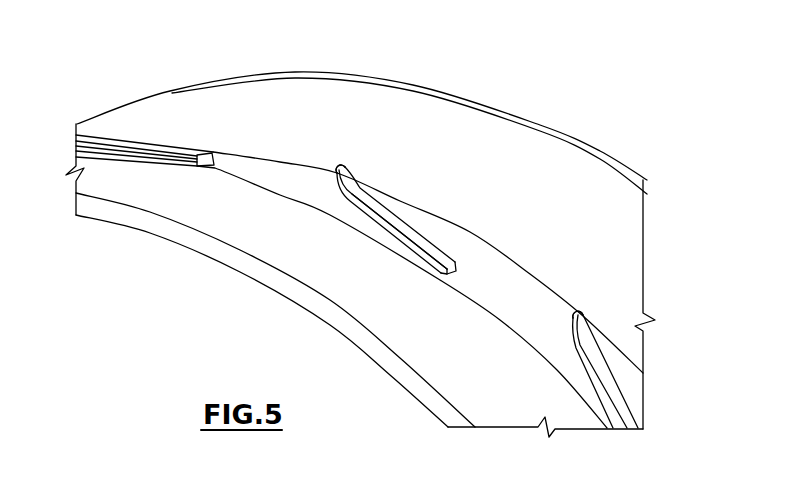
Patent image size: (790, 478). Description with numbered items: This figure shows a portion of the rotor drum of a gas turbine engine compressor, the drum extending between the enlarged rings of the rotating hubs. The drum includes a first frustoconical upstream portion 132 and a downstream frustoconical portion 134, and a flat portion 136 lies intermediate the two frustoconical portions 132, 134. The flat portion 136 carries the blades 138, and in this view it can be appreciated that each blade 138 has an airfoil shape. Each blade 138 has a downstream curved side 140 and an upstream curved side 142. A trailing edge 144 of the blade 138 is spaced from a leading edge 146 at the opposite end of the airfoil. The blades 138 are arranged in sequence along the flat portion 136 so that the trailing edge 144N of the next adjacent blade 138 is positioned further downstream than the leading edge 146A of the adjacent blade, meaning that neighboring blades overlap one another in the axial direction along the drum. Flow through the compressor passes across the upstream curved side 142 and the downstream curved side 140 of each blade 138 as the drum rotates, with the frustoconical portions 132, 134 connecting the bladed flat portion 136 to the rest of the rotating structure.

The first frustoconical upstream portion 132 is at (231, 223).
The downstream frustoconical portion 134 is at (283, 107).
The flat portion 136 is at (300, 185).
The blade 138 is at (388, 223).
The downstream curved side 140 is at (430, 241).
The upstream curved side 142 is at (412, 252).
The trailing edge 144 is at (343, 170).
The trailing edge of next adjacent blade 144N is at (583, 315).
The leading edge 146 is at (216, 160).
The leading edge of adjacent blade 146A is at (457, 270).